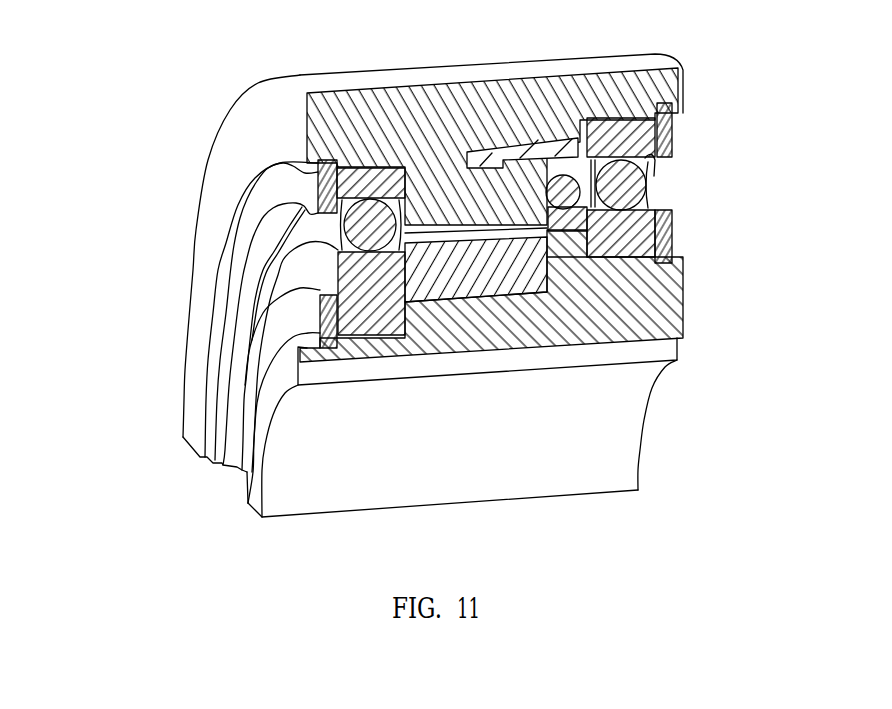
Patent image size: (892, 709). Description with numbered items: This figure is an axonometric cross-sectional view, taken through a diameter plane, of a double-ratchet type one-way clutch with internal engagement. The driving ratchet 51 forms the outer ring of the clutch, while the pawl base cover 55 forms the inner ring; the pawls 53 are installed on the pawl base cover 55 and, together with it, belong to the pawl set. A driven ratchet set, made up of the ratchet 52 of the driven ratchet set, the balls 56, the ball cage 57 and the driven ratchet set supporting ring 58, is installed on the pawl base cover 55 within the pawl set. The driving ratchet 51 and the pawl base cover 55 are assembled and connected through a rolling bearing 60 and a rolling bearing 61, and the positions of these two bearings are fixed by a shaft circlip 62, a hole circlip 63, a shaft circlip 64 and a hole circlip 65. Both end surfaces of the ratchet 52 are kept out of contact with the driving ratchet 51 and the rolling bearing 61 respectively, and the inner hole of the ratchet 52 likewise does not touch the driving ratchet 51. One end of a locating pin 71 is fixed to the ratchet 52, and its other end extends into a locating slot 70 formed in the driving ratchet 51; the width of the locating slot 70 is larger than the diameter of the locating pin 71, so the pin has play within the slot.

The driving ratchet 51 is at (283, 121).
The ratchet of the driven ratchet set 52 is at (545, 172).
The pawl 53 is at (507, 327).
The pawl base cover 55 is at (322, 432).
The ball 56 is at (687, 293).
The ball cage 57 is at (607, 205).
The driven ratchet set supporting ring 58 is at (567, 252).
The rolling bearing 60 is at (307, 238).
The rolling bearing 61 is at (640, 180).
The shaft circlip 62 is at (297, 318).
The hole circlip 63 is at (282, 203).
The shaft circlip 64 is at (670, 215).
The hole circlip 65 is at (657, 137).
The locating slot 70 is at (460, 153).
The locating pin 71 is at (520, 150).